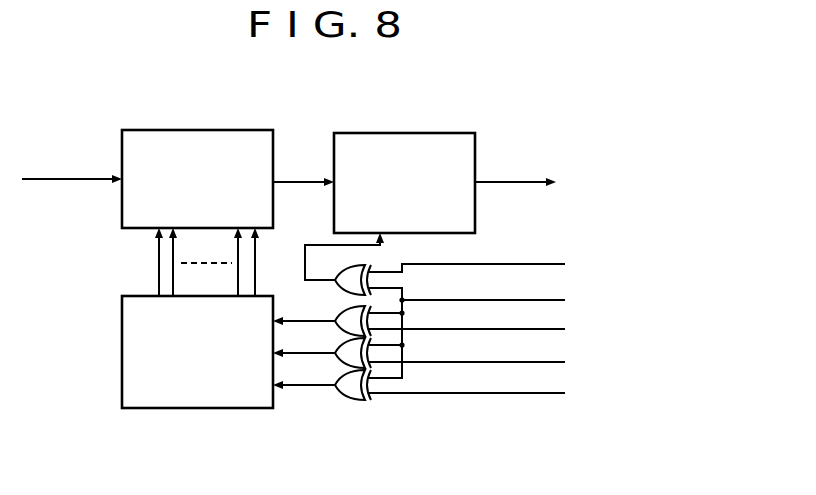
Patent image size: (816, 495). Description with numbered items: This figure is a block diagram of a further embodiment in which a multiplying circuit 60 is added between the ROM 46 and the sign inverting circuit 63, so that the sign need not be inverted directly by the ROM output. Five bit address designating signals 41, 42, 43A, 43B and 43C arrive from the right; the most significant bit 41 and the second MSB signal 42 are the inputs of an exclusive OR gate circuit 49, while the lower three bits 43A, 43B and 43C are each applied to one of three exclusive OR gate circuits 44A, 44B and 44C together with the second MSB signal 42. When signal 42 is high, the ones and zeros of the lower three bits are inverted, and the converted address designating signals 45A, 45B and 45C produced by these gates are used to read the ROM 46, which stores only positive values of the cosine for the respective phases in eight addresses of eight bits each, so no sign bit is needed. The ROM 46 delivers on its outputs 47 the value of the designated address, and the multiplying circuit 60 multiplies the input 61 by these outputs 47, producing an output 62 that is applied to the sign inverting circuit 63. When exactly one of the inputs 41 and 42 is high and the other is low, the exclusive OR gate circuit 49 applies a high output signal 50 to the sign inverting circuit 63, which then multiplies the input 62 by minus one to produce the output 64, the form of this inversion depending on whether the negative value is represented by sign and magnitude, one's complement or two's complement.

The multiplying circuit 60 is at (240, 137).
The sign inverting circuit 63 is at (443, 137).
The ROM 46 is at (140, 398).
The input 61 is at (66, 178).
The output of the multiplying circuit 62 is at (297, 181).
The output 64 is at (519, 181).
The outputs of the ROM 47 is at (183, 243).
The exclusive OR gate circuit 49 is at (368, 268).
The output signal 50 is at (329, 245).
The exclusive OR gate circuit 44A is at (345, 311).
The exclusive OR gate circuit 44B is at (344, 348).
The exclusive OR gate circuit 44C is at (358, 398).
The converted address designating signal 45A is at (281, 318).
The converted address designating signal 45B is at (297, 354).
The converted address designating signal 45C is at (297, 388).
The address designating signal 41 is at (508, 263).
The second MSB signal 42 is at (516, 285).
The address designating signal 43A is at (516, 314).
The address designating signal 43B is at (516, 347).
The address designating signal 43C is at (516, 378).